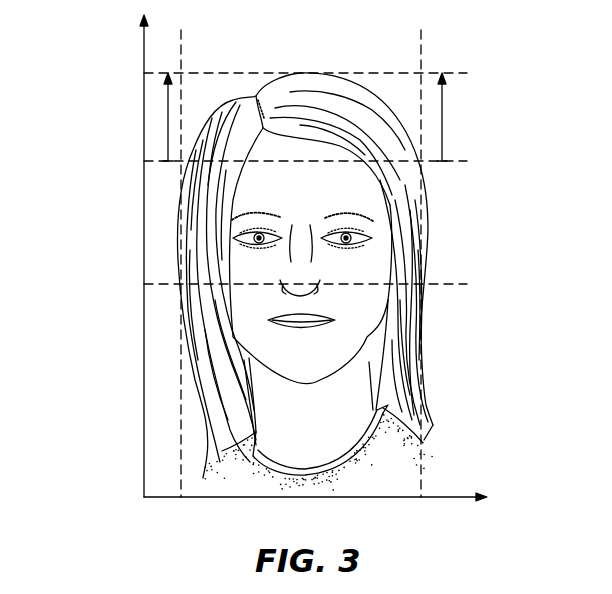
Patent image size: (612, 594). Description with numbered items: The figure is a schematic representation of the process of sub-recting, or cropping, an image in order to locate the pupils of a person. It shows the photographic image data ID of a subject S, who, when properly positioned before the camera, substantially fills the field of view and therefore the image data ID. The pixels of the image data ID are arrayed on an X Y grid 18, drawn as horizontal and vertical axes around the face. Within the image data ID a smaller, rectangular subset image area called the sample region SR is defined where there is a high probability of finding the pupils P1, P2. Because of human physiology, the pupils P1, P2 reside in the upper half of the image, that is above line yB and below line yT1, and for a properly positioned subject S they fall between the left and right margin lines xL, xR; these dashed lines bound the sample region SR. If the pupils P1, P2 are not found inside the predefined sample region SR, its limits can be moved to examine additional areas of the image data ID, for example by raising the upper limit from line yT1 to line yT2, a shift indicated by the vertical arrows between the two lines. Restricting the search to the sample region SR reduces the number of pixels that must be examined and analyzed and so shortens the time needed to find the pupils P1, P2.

The X Y grid 18 is at (139, 128).
The subject S is at (305, 281).
The sample region SR is at (410, 228).
The pupil P1 is at (252, 240).
The pupil P2 is at (357, 242).
The image data ID is at (113, 213).
The line Y T2 yT2 is at (283, 71).
The line Y T1 yT1 is at (283, 158).
The line Y B yB is at (285, 284).
The left margin line xL is at (182, 279).
The right margin line xR is at (415, 279).